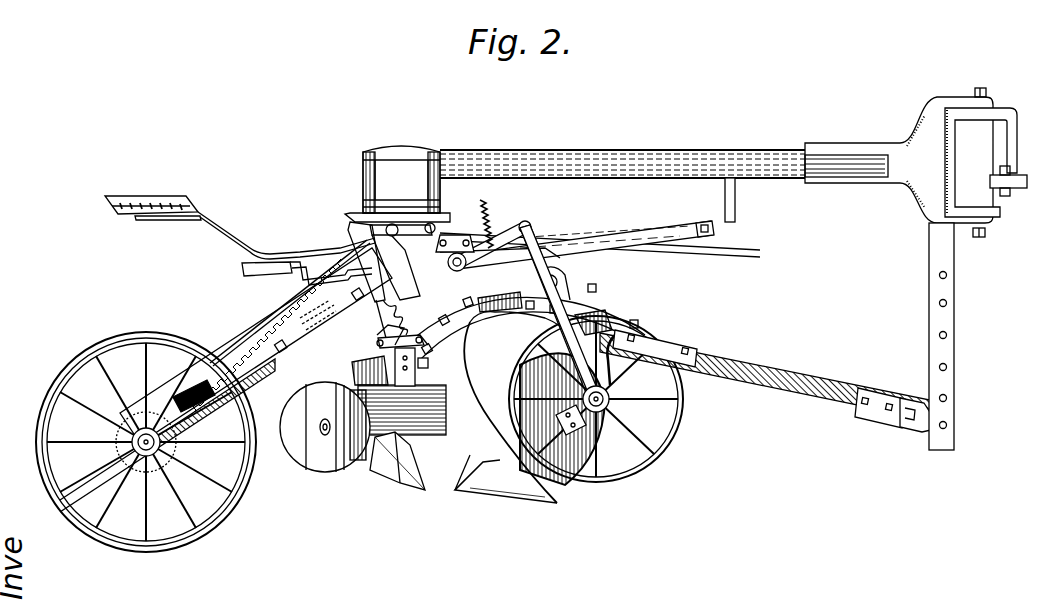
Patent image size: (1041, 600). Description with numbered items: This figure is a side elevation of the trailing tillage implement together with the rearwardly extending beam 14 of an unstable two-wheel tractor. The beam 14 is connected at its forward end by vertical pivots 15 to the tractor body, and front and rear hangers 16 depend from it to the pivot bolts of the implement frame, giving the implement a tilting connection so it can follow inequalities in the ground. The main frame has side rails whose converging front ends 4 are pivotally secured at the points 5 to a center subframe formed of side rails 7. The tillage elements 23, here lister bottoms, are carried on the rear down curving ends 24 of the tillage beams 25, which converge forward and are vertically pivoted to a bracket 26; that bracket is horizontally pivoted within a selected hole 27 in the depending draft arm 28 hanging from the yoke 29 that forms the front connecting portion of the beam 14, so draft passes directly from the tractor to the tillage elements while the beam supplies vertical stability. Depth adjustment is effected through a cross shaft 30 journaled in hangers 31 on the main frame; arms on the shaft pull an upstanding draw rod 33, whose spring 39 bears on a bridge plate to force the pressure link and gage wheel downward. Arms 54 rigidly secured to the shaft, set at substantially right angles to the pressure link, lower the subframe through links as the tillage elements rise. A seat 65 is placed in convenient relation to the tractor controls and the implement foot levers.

The front ends 4 is at (612, 243).
The points 5 is at (700, 224).
The side rails 7 is at (582, 226).
The beam 14 is at (668, 150).
The vertical pivots 15 is at (982, 88).
The hangers 16 is at (736, 196).
The tillage elements 23 is at (492, 490).
The rear down curving ends 24 is at (450, 330).
The beams 25 is at (745, 365).
The bracket 26 is at (944, 418).
The hole 27 is at (947, 306).
The draft arm 28 is at (929, 303).
The yoke 29 is at (915, 125).
The cross shaft 30 is at (482, 278).
The hangers 31 is at (457, 235).
The draw rod 33 is at (513, 255).
The spring 39 is at (492, 218).
The arms 54 is at (275, 345).
The seat 65 is at (140, 197).